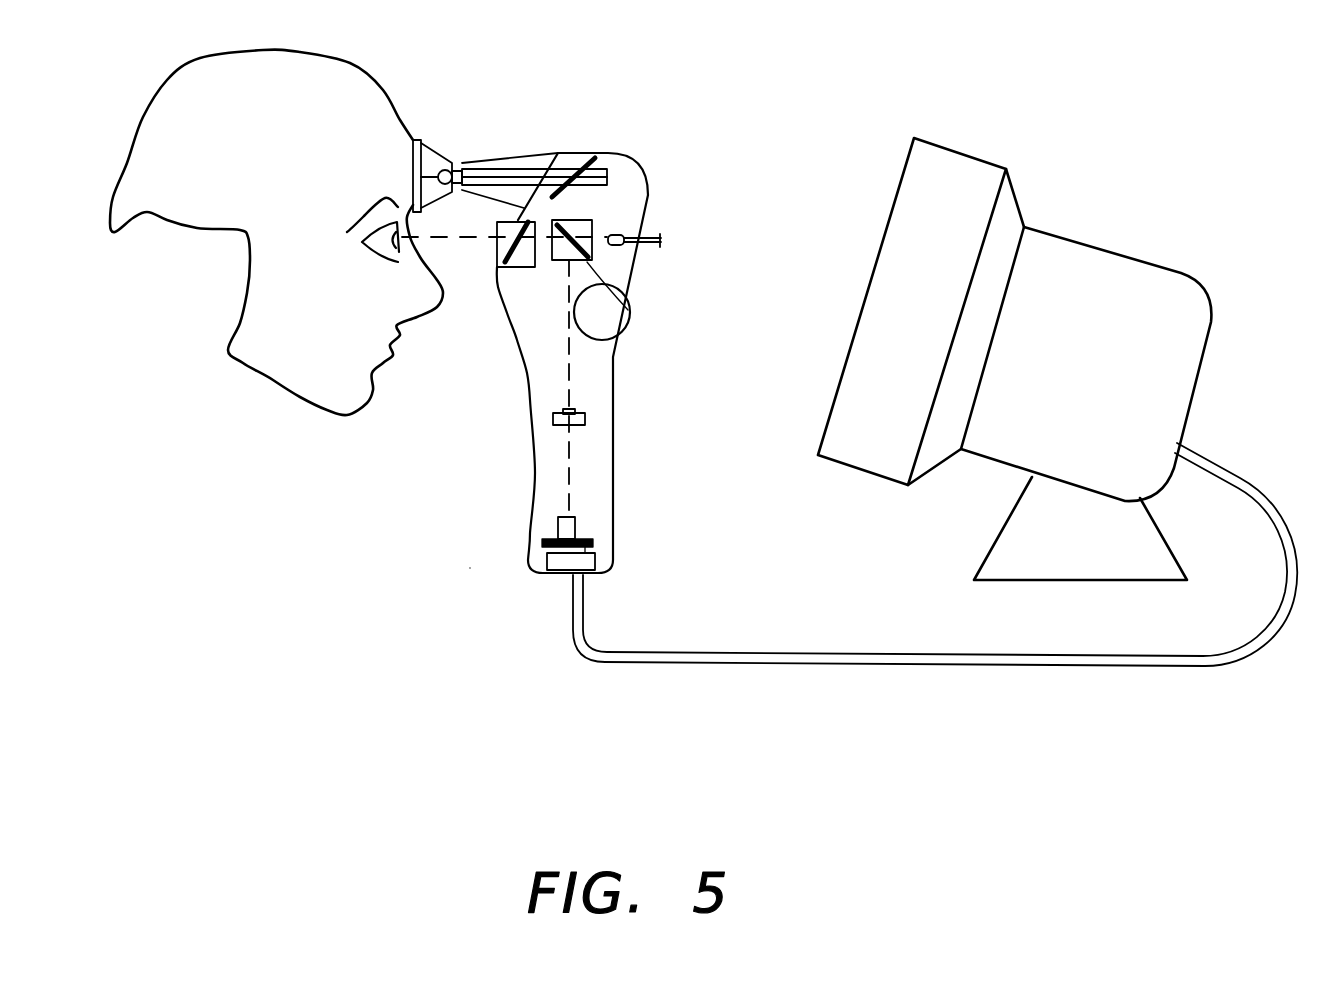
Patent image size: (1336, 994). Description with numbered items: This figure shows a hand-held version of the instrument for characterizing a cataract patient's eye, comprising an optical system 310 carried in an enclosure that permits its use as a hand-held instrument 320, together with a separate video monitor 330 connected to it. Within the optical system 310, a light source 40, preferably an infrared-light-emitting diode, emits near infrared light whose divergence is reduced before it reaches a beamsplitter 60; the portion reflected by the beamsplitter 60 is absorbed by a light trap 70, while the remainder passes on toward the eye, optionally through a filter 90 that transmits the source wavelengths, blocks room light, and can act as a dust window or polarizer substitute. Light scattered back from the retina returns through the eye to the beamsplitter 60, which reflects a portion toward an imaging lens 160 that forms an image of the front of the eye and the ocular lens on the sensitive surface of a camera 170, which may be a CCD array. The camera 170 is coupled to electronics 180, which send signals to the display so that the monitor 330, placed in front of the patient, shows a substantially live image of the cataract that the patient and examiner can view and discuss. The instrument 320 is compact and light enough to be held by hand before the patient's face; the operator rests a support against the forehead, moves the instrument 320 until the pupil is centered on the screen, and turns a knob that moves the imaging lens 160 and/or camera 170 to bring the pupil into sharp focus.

The light source 40 is at (624, 234).
The beamsplitter 60 is at (628, 316).
The light trap 70 is at (558, 157).
The filter 90 is at (520, 260).
The imaging lens 160 is at (587, 418).
The camera 170 is at (557, 527).
The electronics 180 is at (545, 560).
The optical system 310 is at (624, 188).
The hand-held instrument 320 is at (471, 568).
The video monitor 330 is at (1120, 277).